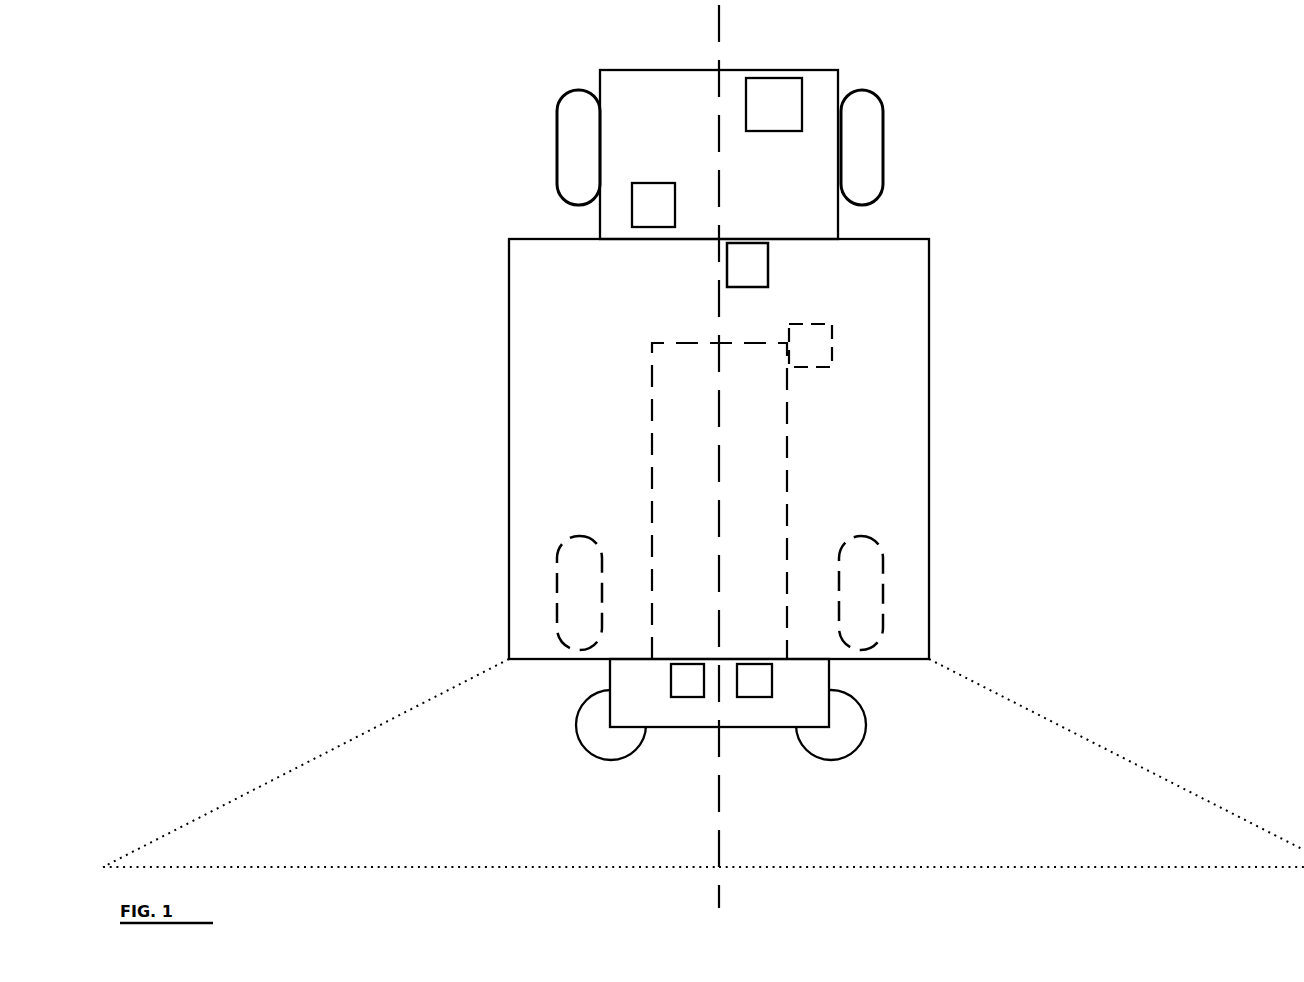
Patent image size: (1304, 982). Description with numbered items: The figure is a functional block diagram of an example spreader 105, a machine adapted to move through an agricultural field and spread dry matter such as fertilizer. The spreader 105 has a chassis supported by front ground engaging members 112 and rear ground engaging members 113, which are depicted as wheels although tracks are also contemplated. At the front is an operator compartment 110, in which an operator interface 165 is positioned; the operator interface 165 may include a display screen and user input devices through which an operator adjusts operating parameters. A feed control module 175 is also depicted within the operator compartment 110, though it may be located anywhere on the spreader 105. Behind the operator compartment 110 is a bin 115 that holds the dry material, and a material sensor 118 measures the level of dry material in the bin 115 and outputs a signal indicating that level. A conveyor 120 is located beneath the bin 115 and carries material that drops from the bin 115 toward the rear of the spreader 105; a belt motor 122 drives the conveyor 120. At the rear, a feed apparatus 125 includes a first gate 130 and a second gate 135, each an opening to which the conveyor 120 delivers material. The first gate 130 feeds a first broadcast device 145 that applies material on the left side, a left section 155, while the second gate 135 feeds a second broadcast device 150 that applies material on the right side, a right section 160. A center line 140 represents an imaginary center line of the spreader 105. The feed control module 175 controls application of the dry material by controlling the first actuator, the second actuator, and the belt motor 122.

The spreader 105 is at (402, 162).
The operator compartment 110 is at (618, 68).
The front ground engaging members 112 is at (557, 137).
The rear ground engaging members 113 is at (565, 540).
The bin 115 is at (930, 310).
The material sensor 118 is at (768, 273).
The conveyor 120 is at (666, 340).
The belt motor 122 is at (818, 367).
The feed apparatus 125 is at (747, 728).
The first gate 130 is at (670, 683).
The second gate 135 is at (773, 683).
The center line 140 is at (724, 903).
The first broadcast device 145 is at (605, 760).
The second broadcast device 150 is at (842, 760).
The left section 155 is at (332, 833).
The right section 160 is at (1070, 815).
The operator interface 165 is at (785, 132).
The feed control module 175 is at (646, 183).